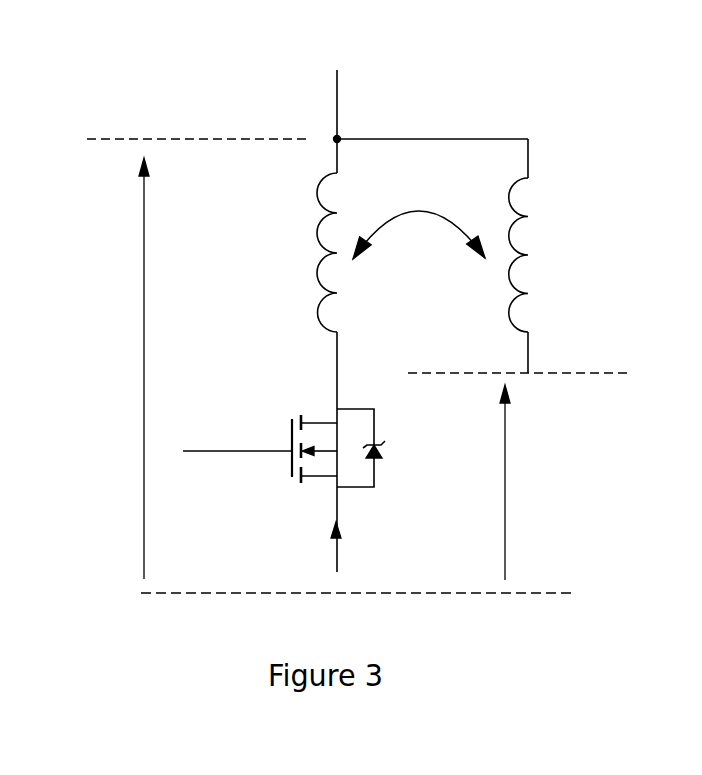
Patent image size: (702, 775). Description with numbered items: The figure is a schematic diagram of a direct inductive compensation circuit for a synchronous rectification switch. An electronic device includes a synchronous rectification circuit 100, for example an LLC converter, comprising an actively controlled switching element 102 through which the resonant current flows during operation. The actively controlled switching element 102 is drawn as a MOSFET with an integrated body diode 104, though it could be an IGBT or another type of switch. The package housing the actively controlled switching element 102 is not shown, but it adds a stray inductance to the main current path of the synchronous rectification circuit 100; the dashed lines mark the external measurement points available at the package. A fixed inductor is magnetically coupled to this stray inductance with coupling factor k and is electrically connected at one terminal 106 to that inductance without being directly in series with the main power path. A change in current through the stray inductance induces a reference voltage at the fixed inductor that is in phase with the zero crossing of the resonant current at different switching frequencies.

The synchronous rectification circuit 100 is at (120, 59).
The actively controlled switching element 102 is at (278, 380).
The integrated body diode 104 is at (419, 488).
The terminal 106 is at (360, 108).